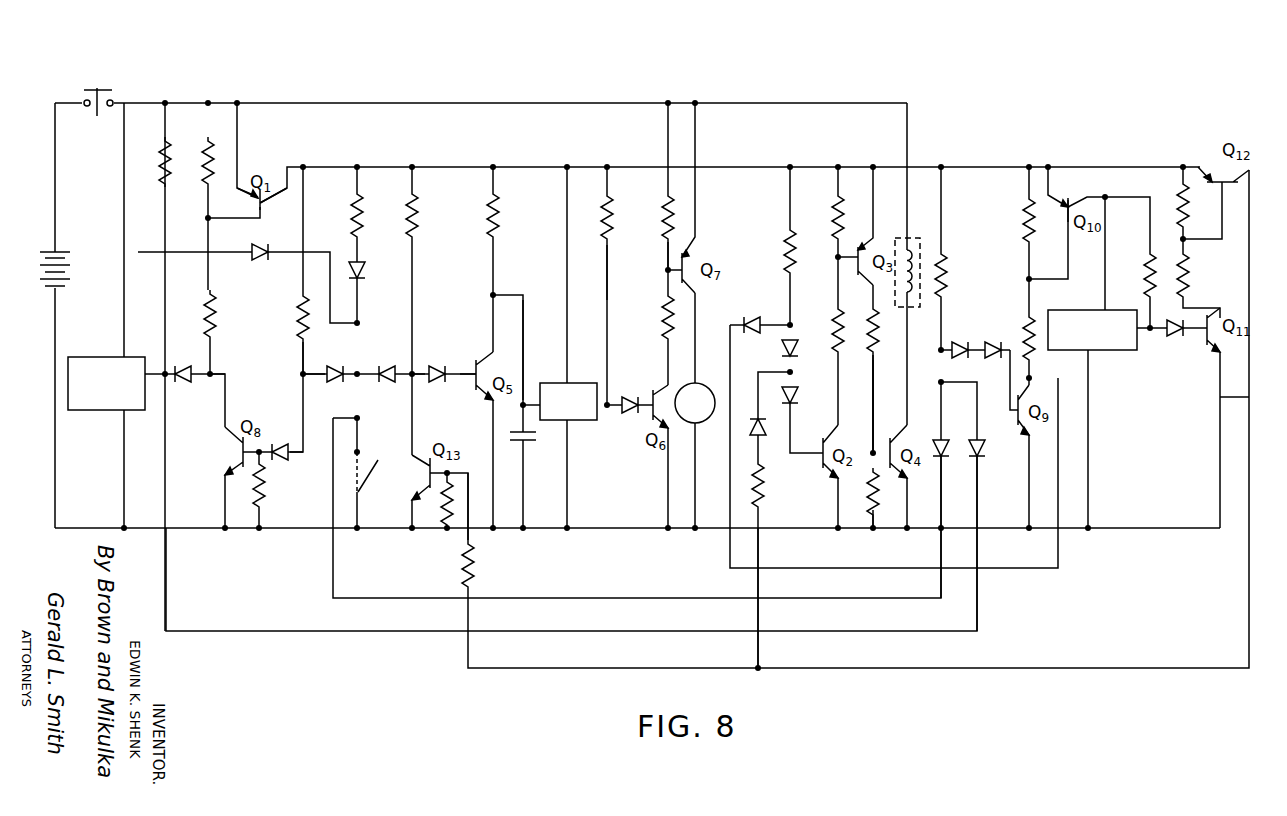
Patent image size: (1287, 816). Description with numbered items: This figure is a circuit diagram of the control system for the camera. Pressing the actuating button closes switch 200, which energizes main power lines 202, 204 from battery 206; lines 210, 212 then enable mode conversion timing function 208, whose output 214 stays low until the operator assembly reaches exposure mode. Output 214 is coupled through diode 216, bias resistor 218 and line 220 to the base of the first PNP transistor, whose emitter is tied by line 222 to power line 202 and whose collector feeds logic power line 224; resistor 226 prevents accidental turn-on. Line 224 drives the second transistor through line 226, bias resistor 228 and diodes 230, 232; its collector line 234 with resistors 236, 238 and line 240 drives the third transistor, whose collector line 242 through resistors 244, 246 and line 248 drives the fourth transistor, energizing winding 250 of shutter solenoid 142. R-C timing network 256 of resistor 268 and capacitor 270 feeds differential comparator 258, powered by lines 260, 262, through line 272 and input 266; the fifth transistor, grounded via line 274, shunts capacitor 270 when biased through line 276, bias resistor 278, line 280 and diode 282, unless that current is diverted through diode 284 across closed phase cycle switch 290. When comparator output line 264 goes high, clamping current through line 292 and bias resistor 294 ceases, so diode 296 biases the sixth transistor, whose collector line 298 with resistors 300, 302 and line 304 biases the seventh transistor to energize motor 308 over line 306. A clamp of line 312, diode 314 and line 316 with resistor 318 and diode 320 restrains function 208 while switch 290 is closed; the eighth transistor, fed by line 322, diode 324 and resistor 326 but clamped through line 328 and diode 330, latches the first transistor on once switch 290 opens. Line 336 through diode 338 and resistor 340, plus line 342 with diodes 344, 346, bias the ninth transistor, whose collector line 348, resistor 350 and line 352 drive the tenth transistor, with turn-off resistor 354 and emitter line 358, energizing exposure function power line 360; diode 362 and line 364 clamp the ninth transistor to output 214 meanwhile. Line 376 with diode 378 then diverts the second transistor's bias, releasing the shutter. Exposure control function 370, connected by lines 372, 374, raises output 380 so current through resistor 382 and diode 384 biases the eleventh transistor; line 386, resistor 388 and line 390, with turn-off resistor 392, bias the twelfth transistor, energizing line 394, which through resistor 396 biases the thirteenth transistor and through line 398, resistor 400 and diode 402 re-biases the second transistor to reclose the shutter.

The shutter solenoid 142 is at (920, 238).
The switch 200 is at (104, 92).
The main power line 202 is at (276, 103).
The main power line 204 is at (199, 528).
The battery 206 is at (48, 282).
The mode conversion timing function 208 is at (84, 357).
The line 210 is at (124, 155).
The line 212 is at (124, 443).
The output 214 is at (174, 370).
The diode 216 is at (188, 380).
The bias resistor 218 is at (212, 328).
The line 220 is at (248, 222).
The line 222 is at (244, 146).
The logic power line 224 is at (311, 168).
The line 226 is at (206, 148).
The bias resistor 228 is at (782, 238).
The diode 230 is at (780, 352).
The diode 232 is at (800, 394).
The line 234 is at (836, 282).
The resistor 236 is at (830, 322).
The resistor 238 is at (834, 208).
The line 240 is at (836, 246).
The line 242 is at (874, 300).
The resistor 244 is at (874, 342).
The resistor 246 is at (875, 523).
The line 248 is at (876, 462).
The winding 250 is at (902, 240).
The R-C timing network 256 is at (530, 333).
The differential comparator 258 is at (585, 420).
The line 260 is at (567, 228).
The line 262 is at (568, 470).
The output line 264 is at (604, 396).
The input line 266 is at (540, 396).
The resistor 268 is at (503, 208).
The capacitor 270 is at (536, 466).
The line 272 is at (498, 294).
The line 274 is at (488, 442).
The line 276 is at (414, 290).
The bias resistor 278 is at (422, 208).
The line 280 is at (422, 384).
The diode 282 is at (444, 362).
The diode 284 is at (384, 362).
The phase cycle switch 290 is at (380, 473).
The line 292 is at (607, 292).
The bias resistor 294 is at (606, 238).
The diode 296 is at (630, 393).
The line 298 is at (666, 290).
The bias resistor 300 is at (662, 310).
The bias resistor 302 is at (666, 212).
The line 304 is at (666, 268).
The line 306 is at (697, 300).
The d.c. motor 308 is at (710, 425).
The line 312 is at (140, 275).
The diode 314 is at (268, 250).
The line 316 is at (360, 290).
The current limiting resistor 318 is at (366, 208).
The diode 320 is at (366, 268).
The line 322 is at (302, 426).
The diode 324 is at (280, 462).
The bias resistor 326 is at (300, 298).
The line 328 is at (300, 372).
The diode 330 is at (330, 362).
The line 336 is at (943, 306).
The diode 338 is at (946, 454).
The bias resistor 340 is at (946, 270).
The line 342 is at (1010, 366).
The diode 344 is at (988, 338).
The diode 346 is at (956, 338).
The line 348 is at (1030, 372).
The bias resistor 350 is at (1036, 308).
The line 352 is at (1076, 228).
The resistor 354 is at (1018, 212).
The line 358 is at (1054, 182).
The exposure function power line 360 is at (1117, 196).
The diode 362 is at (984, 448).
The line 364 is at (167, 603).
The exposure control function 370 is at (1102, 350).
The line 372 is at (1088, 253).
The line 374 is at (1090, 458).
The current diverting line 376 is at (732, 464).
The diode 378 is at (752, 317).
The output line 380 is at (1172, 339).
The bias resistor 382 is at (1150, 262).
The diode 384 is at (1204, 338).
The line 386 is at (1196, 300).
The bias resistor 388 is at (1198, 271).
The line 390 is at (1222, 218).
The turn-off bias resistor 392 is at (1179, 184).
The line 394 is at (830, 668).
The bias resistor 396 is at (474, 554).
The line 398 is at (760, 562).
The bias resistor 400 is at (768, 508).
The diode 402 is at (768, 424).